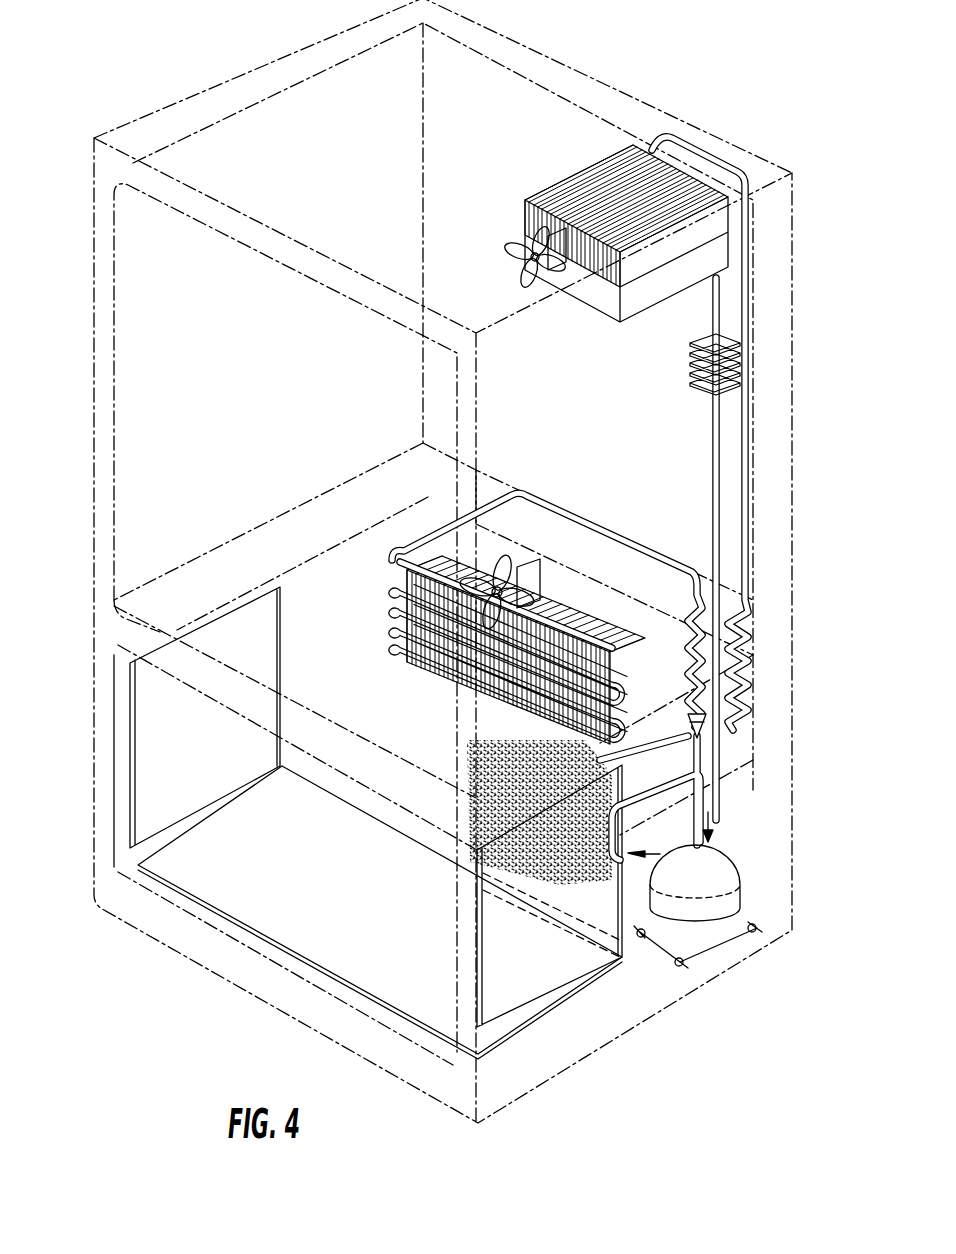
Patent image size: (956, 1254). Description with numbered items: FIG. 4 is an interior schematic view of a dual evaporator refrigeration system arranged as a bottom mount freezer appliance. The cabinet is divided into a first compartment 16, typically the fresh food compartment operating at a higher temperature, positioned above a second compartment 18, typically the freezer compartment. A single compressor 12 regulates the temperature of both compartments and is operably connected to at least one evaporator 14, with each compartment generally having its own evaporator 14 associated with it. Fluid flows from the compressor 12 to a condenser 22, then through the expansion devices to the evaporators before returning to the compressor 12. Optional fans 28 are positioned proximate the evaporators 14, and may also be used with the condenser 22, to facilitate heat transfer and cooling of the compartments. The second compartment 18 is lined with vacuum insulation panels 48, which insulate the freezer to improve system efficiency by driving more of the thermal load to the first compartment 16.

The compressor 12 is at (733, 913).
The evaporator 14 is at (620, 162).
The first compartment 16 is at (182, 429).
The second compartment 18 is at (285, 879).
The condenser 22 is at (532, 860).
The fan 28 is at (520, 242).
The vacuum insulation panel 48 is at (153, 775).